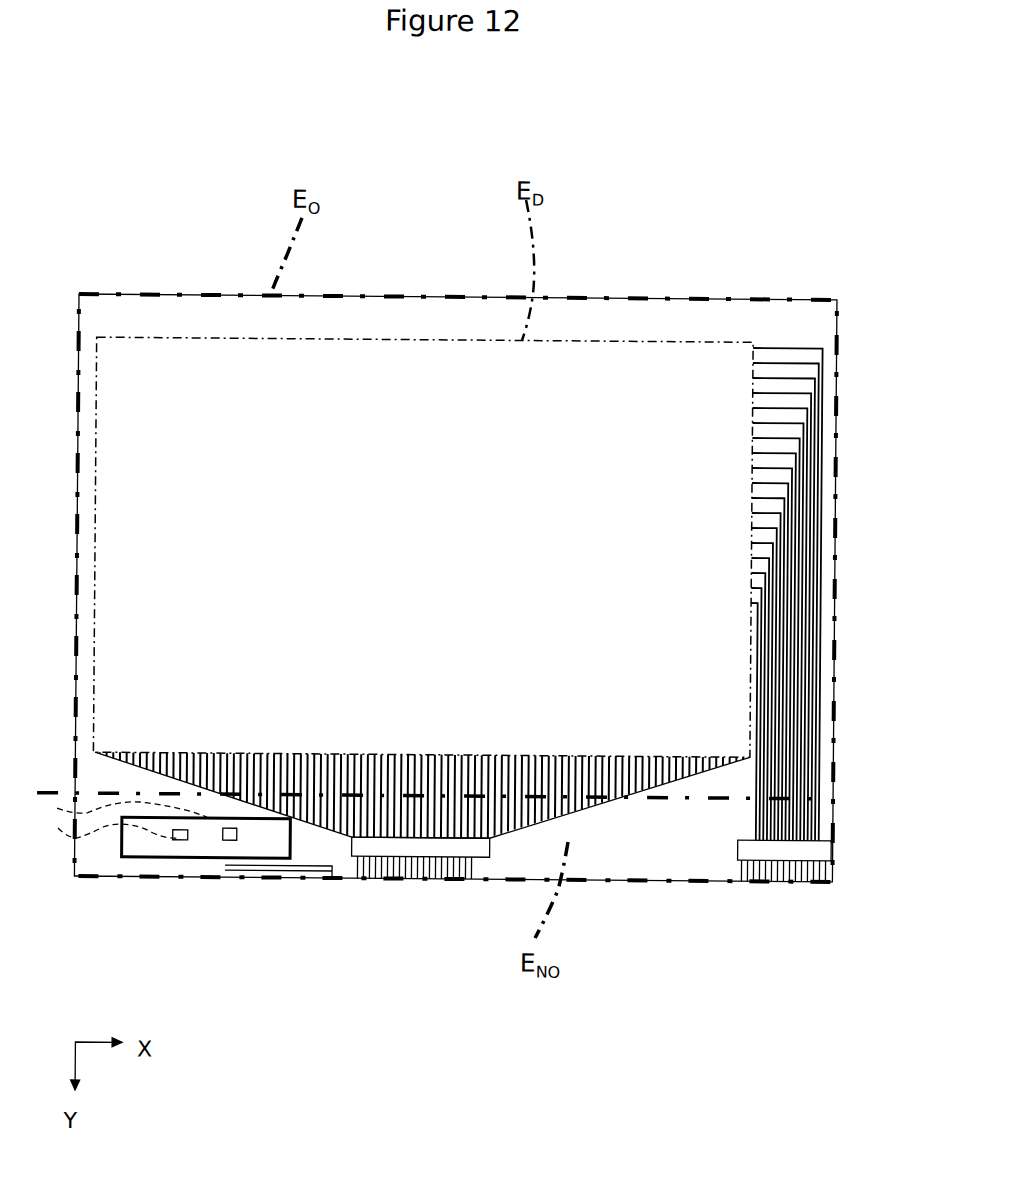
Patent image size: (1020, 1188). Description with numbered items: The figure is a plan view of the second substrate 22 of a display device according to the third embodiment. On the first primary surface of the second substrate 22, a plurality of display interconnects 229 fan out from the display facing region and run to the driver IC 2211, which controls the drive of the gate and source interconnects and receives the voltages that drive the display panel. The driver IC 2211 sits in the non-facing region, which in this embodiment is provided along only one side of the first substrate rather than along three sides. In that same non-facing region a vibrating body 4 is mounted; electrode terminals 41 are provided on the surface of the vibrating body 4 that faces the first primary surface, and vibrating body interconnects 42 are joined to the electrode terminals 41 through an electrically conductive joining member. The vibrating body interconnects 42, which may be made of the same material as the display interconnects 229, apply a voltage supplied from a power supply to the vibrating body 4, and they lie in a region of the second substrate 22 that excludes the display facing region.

The second substrate 22 is at (492, 154).
The display interconnects 229 is at (769, 763).
The driver IC 2211 is at (451, 840).
The vibrating body 4 is at (126, 848).
The electrode terminals 41 is at (183, 839).
The vibrating body interconnects 42 is at (186, 839).